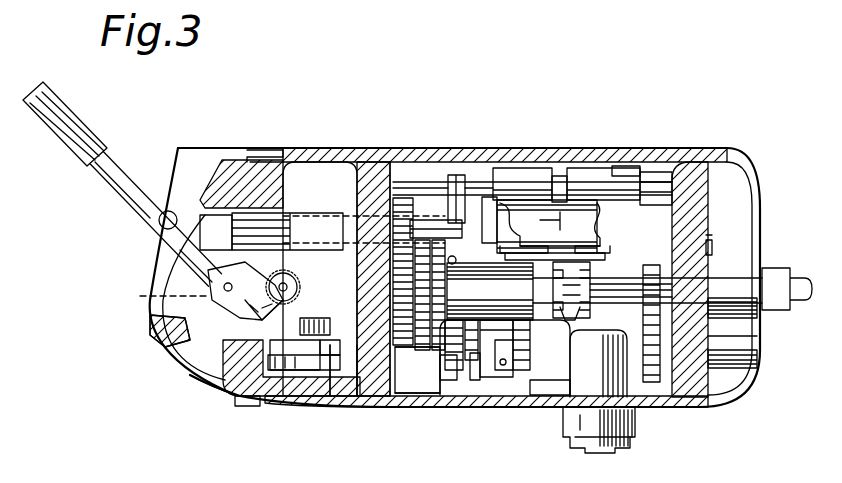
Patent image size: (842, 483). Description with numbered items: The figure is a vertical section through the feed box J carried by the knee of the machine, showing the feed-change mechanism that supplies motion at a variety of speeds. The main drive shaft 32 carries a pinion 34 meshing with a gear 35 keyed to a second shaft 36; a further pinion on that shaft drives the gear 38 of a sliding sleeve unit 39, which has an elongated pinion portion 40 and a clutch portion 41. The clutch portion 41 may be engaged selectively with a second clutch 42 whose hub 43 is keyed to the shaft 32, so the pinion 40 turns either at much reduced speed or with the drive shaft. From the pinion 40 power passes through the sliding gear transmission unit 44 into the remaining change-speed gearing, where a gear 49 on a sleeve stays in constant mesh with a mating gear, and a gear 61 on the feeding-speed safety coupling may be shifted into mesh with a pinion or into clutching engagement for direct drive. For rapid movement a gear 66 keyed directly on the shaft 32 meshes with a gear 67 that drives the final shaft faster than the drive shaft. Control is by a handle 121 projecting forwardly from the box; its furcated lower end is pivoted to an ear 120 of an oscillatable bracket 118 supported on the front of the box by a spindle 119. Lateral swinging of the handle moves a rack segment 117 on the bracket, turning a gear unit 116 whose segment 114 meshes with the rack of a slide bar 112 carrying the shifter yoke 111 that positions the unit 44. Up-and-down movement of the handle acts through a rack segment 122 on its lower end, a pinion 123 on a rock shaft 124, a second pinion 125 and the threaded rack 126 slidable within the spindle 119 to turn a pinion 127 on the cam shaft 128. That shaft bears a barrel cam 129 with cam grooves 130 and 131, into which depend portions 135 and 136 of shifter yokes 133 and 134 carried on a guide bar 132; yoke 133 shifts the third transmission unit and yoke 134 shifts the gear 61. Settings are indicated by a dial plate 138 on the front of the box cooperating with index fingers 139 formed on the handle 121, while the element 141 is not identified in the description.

The handle 121 is at (112, 190).
The index fingers 139 is at (160, 212).
The pinion 127 is at (268, 165).
The spindle 119 is at (200, 235).
The rack 126 is at (232, 258).
The oscillatable bracket 118 is at (215, 268).
The ear 120 is at (208, 295).
The dial plate 138 is at (155, 312).
The rack segment 117 is at (218, 378).
The rack segment 122 is at (238, 314).
The pinion 123 is at (292, 278).
The second pinion 125 is at (317, 304).
The rock shaft 124 is at (275, 375).
The gear unit 116 is at (300, 372).
The segment 114 is at (305, 372).
The feed box J is at (352, 402).
The gear 67 is at (405, 200).
The gear 49 is at (440, 198).
The collar 141 is at (456, 200).
The rotatable cam shaft 128 is at (510, 190).
The shifter yoke 133 is at (522, 170).
The portion 135 is at (578, 160).
The shifter yoke 134 is at (622, 168).
The guide bar 132 is at (660, 165).
The gear 61 is at (638, 178).
The cam groove 130 is at (540, 205).
The cam groove 131 is at (582, 200).
The barrel cam 129 is at (560, 215).
The portion 136 is at (557, 232).
The drive shaft 32 is at (672, 290).
The pinion 34 is at (700, 256).
The shaft 36 is at (672, 336).
The second clutch 42 is at (566, 320).
The clutch portion 41 is at (530, 342).
The sliding gear transmission unit 44 is at (545, 330).
The sliding sleeve unit 39 is at (418, 370).
The hub 43 is at (598, 363).
The gear 35 is at (651, 383).
The elongated pinion portion 40 is at (522, 395).
The shifter yoke 111 is at (472, 362).
The slide bar 112 is at (455, 360).
The gear 66 is at (400, 335).
The gear 38 is at (410, 380).